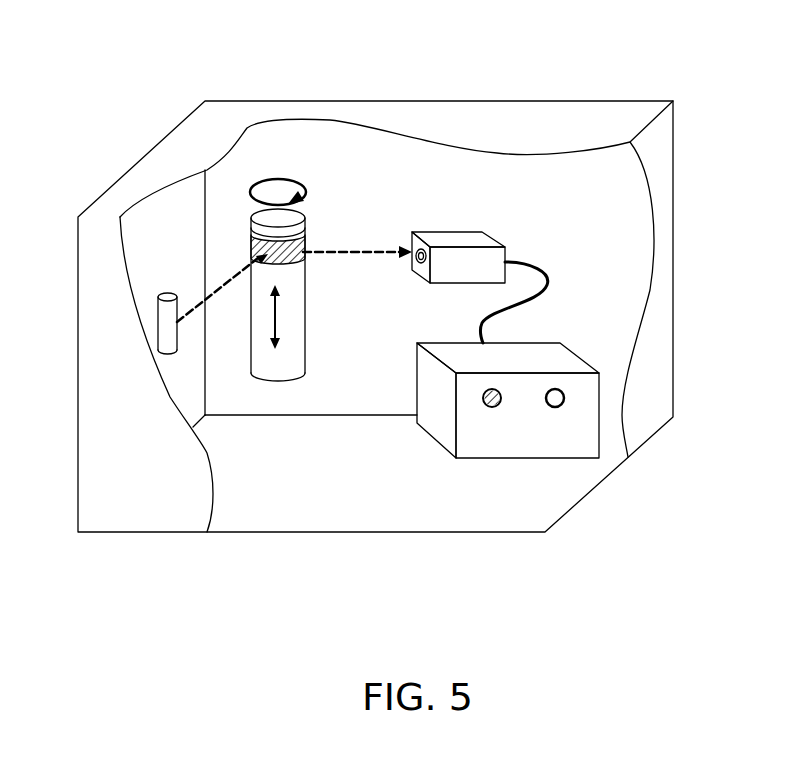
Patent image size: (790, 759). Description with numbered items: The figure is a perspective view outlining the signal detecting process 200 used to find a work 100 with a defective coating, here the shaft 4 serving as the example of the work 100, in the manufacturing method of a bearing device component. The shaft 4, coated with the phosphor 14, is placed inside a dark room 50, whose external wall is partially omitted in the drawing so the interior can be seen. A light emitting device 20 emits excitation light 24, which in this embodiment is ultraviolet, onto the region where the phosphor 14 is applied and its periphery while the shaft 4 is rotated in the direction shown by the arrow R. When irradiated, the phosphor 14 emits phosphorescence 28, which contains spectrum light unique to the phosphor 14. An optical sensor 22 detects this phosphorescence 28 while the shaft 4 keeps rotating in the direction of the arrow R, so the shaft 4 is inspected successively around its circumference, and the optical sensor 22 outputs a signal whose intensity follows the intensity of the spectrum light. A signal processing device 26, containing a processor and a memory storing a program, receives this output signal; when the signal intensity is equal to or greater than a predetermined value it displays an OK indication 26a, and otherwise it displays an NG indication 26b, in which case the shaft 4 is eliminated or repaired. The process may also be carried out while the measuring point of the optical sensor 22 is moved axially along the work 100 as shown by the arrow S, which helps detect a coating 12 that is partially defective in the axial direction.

The signal detecting process 200 is at (402, 92).
The dark room 50 is at (507, 128).
The shaft 4 is at (267, 354).
The work 100 is at (285, 370).
The phosphor 14 is at (304, 237).
The coating 12 is at (305, 257).
The light emitting device 20 is at (160, 295).
The excitation light 24 is at (224, 289).
The phosphorescence 28 is at (387, 256).
The optical sensor 22 is at (460, 238).
The signal processing device 26 is at (557, 354).
The OK indication 26a is at (481, 398).
The NG indication 26b is at (566, 397).
The arrow R is at (277, 177).
The arrow S is at (277, 314).